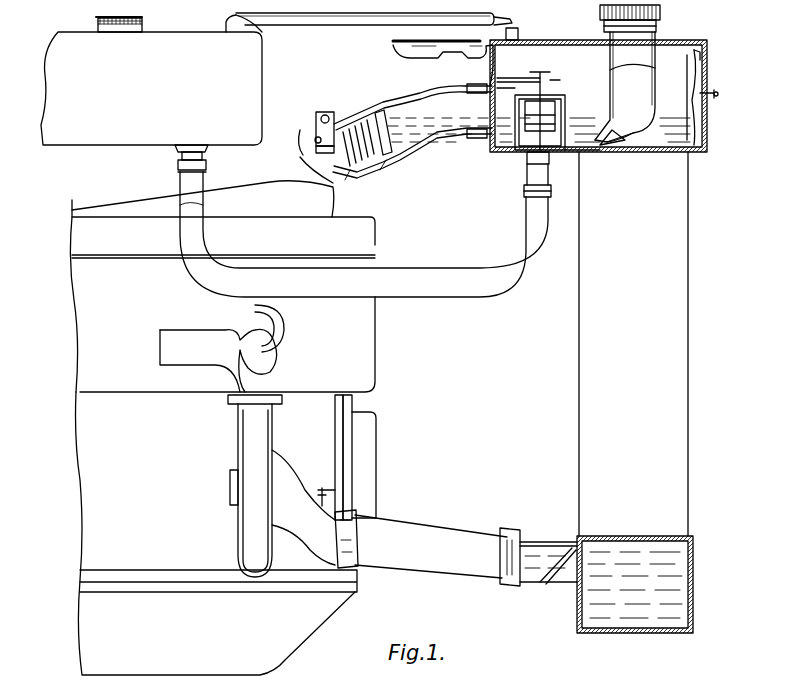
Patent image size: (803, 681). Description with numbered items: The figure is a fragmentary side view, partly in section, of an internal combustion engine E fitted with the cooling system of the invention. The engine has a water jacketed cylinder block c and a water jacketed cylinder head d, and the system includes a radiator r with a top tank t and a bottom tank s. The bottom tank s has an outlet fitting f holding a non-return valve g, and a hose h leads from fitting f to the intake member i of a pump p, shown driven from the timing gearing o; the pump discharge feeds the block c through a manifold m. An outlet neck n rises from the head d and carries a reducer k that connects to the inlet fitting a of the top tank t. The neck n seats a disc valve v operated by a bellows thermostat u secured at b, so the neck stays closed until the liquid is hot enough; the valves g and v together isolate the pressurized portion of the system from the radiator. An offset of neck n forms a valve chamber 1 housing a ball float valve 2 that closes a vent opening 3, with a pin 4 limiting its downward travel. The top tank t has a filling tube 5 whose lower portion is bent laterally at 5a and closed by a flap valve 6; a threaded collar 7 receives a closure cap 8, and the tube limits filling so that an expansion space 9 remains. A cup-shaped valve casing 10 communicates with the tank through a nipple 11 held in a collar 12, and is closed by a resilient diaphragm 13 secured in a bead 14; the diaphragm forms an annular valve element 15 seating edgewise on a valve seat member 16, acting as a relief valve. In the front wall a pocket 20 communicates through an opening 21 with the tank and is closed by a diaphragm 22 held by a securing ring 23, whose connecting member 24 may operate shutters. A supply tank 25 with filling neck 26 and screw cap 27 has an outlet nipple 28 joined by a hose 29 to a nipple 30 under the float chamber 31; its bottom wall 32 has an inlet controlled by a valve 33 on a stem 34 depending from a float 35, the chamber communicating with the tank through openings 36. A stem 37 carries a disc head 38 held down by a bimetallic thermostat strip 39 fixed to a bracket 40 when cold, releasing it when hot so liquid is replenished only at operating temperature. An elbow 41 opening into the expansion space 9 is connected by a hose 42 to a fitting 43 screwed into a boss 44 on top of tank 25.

The valve chamber 1 is at (316, 122).
The ball float valve 2 is at (318, 112).
The vent opening 3 is at (326, 114).
The pin 4 is at (316, 142).
The filling tube 5 is at (612, 52).
The laterally bent lower portion of filling tube 5a is at (640, 135).
The flap valve 6 is at (612, 142).
The threaded collar 7 is at (660, 28).
The closure cap 8 is at (660, 8).
The expansion space 9 is at (558, 44).
The valve casing 10 is at (420, 50).
The nipple 11 is at (470, 62).
The collar 12 is at (500, 14).
The diaphragm 13 is at (415, 42).
The bead 14 is at (398, 46).
The valve element 15 is at (445, 52).
The valve seat member 16 is at (448, 52).
The pocket 20 is at (687, 105).
The opening 21 is at (704, 126).
The diaphragm 22 is at (705, 80).
The securing ring 23 is at (706, 148).
The connecting member 24 is at (717, 92).
The supply tank 25 is at (151, 88).
The filling neck 26 is at (108, 33).
The screw cap 27 is at (98, 18).
The outlet nipple 28 is at (178, 156).
The hose 29 is at (457, 290).
The nipple 30 is at (524, 192).
The float chamber 31 is at (566, 102).
The bottom wall 32 is at (527, 176).
The valve 33 is at (549, 162).
The stem 34 is at (512, 150).
The float 35 is at (555, 103).
The openings 36 is at (580, 153).
The stem 37 is at (561, 80).
The disc head 38 is at (541, 72).
The bimetallic thermostat strip 39 is at (506, 90).
The bracket 40 is at (520, 78).
The elbow 41 is at (518, 32).
The hose 42 is at (332, 26).
The fitting 43 is at (262, 32).
The boss 44 is at (228, 33).
The inlet fitting a is at (452, 88).
The securing point b is at (340, 166).
The cylinder block c is at (86, 323).
The cylinder head d is at (80, 235).
The internal combustion engine E is at (92, 484).
The outlet fitting f is at (548, 540).
The non-return valve g is at (553, 582).
The hose h is at (428, 532).
The intake member i is at (448, 136).
The reducer k is at (402, 162).
The manifold m is at (278, 348).
The outlet neck n is at (365, 170).
The timing gearing o is at (362, 458).
The pump p is at (248, 470).
The radiator r is at (692, 346).
The bottom tank s is at (690, 576).
The top tank t is at (697, 45).
The bellows thermostat u is at (352, 125).
The disc valve v is at (380, 110).